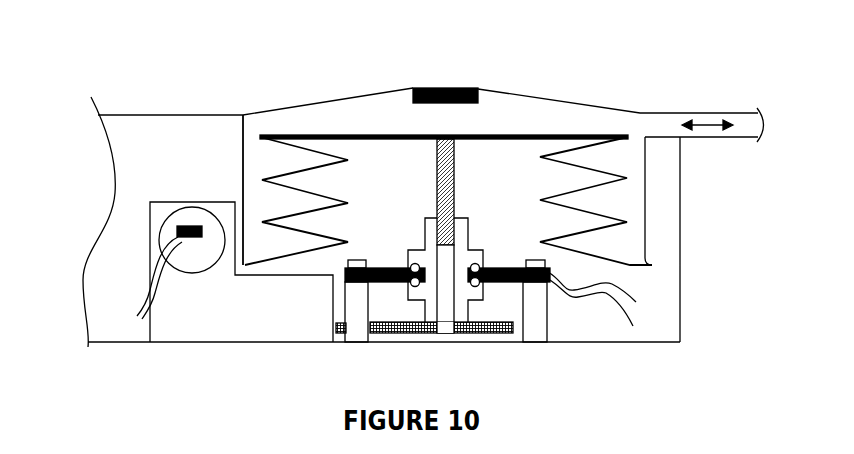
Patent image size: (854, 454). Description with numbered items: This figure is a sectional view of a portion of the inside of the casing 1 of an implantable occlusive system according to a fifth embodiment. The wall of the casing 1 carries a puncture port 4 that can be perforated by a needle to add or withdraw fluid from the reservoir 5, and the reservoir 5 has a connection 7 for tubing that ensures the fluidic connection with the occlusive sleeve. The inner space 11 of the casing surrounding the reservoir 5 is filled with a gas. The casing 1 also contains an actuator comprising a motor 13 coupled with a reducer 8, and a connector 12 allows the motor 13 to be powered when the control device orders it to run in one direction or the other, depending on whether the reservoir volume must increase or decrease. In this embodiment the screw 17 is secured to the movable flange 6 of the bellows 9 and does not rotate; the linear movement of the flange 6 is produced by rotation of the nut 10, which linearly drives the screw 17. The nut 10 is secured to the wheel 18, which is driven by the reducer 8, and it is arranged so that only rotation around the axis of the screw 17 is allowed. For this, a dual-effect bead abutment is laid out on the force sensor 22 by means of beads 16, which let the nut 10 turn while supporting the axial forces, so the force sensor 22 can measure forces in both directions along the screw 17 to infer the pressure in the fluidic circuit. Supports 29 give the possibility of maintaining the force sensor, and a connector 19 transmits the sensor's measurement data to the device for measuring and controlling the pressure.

The casing 1 is at (176, 115).
The puncture port 4 is at (450, 88).
The reservoir 5 is at (352, 108).
The movable flange 6 is at (492, 137).
The connection 7 is at (706, 121).
The reducer 8 is at (190, 202).
The bellows 9 is at (343, 200).
The nut 10 is at (470, 218).
The inner space 11 is at (672, 245).
The connector 12 is at (142, 308).
The motor 13 is at (185, 273).
The beads 16 is at (481, 267).
The screw 17 is at (455, 183).
The wheel 18 is at (400, 334).
The connector 19 is at (645, 312).
The force sensor 22 is at (382, 268).
The supports 29 is at (357, 336).